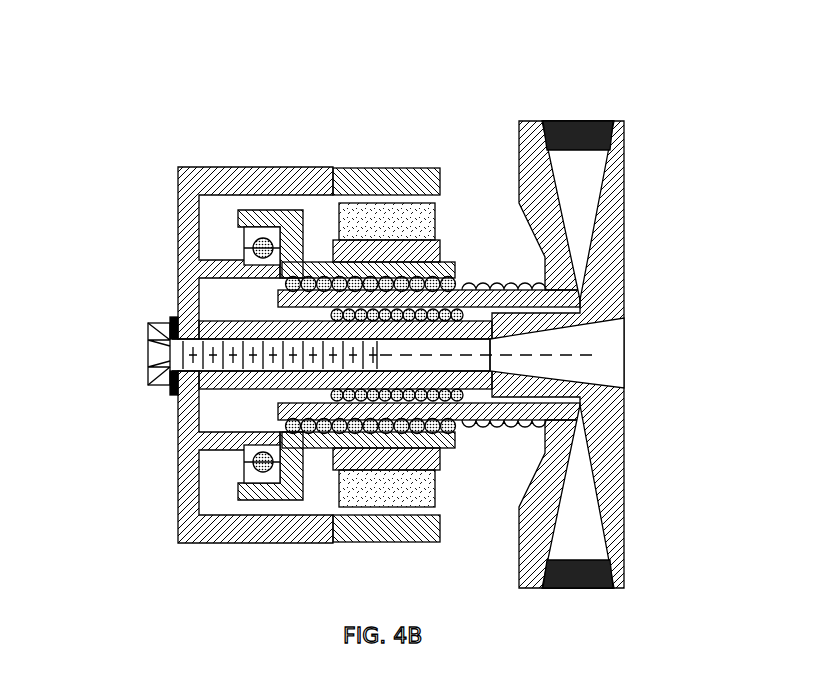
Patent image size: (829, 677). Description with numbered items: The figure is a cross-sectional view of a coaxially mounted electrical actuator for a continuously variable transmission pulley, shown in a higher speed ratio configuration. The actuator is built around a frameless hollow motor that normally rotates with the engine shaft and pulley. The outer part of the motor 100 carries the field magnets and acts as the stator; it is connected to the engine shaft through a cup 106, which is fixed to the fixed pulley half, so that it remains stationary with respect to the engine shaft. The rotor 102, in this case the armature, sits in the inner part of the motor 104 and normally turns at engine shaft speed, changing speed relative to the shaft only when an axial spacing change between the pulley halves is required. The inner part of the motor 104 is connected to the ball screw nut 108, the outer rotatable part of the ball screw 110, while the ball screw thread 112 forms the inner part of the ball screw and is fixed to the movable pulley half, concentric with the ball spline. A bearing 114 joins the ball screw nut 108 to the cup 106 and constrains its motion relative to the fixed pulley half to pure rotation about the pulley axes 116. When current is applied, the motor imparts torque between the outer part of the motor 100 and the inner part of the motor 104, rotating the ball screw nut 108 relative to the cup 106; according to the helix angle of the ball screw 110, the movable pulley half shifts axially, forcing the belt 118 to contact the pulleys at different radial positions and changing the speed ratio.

The outer part of the motor 100 is at (386, 328).
The rotor 102 is at (372, 497).
The inner part of the motor 104 is at (460, 474).
The cup 106 is at (195, 302).
The ball screw nut 108 is at (295, 472).
The ball screw 110 is at (258, 413).
The ball screw thread 112 is at (488, 270).
The bearing 114 is at (264, 238).
The pulley axes 116 is at (425, 323).
The belt 118 is at (585, 121).